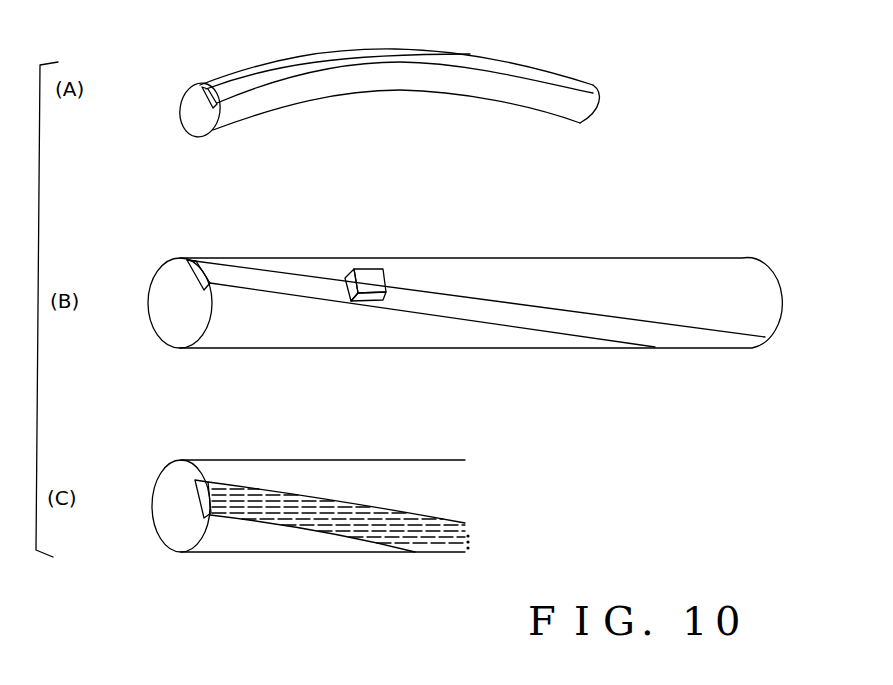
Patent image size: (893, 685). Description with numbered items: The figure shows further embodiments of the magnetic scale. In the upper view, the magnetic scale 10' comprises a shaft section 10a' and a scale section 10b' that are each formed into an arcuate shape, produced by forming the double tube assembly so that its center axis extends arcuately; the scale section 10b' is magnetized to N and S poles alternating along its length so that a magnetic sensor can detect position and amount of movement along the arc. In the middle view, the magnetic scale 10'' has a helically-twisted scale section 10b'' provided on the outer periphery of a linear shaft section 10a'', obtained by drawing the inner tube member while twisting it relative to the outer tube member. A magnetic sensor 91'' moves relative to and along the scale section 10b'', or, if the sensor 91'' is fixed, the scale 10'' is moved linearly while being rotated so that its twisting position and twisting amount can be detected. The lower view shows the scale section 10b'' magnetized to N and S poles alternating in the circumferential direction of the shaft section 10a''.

The magnetic scale 10' is at (419, 93).
The shaft section 10a' is at (387, 103).
The scale section 10b' is at (397, 105).
The magnetic scale 10'' is at (465, 407).
The shaft section 10a'' is at (465, 430).
The scale section 10b'' is at (476, 431).
The magnetic sensor 91'' is at (405, 262).